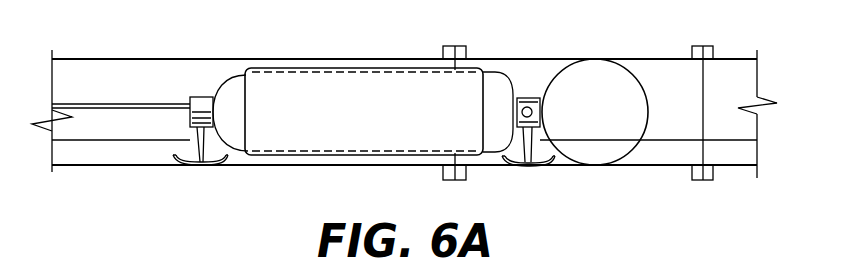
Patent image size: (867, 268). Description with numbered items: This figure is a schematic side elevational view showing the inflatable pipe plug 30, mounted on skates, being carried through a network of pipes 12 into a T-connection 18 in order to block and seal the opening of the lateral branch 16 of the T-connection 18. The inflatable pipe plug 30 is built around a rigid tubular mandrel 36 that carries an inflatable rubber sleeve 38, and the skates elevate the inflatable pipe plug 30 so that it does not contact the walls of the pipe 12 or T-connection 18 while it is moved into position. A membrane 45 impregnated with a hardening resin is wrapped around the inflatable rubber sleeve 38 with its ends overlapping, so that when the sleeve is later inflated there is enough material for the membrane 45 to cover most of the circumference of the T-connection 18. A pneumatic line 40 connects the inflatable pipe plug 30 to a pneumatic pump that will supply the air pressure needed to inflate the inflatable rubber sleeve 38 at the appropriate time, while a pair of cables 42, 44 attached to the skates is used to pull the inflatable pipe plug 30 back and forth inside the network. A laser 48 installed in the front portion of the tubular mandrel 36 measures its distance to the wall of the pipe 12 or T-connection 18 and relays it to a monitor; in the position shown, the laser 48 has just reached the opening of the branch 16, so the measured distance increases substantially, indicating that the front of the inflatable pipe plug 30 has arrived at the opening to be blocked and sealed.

The pipe 12 is at (100, 58).
The branch 16 is at (583, 122).
The T-connection 18 is at (640, 58).
The inflatable pipe plug 30 is at (268, 60).
The rigid tubular mandrel 36 is at (523, 164).
The inflatable rubber sleeve 38 is at (225, 90).
The pneumatic line 40 is at (163, 104).
The cable 42 is at (737, 140).
The cable 44 is at (95, 140).
The membrane 45 is at (343, 66).
The laser 48 is at (530, 98).